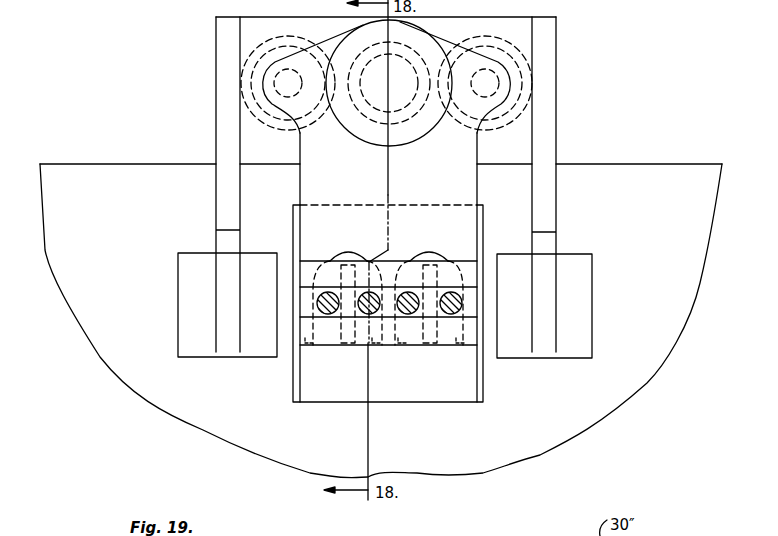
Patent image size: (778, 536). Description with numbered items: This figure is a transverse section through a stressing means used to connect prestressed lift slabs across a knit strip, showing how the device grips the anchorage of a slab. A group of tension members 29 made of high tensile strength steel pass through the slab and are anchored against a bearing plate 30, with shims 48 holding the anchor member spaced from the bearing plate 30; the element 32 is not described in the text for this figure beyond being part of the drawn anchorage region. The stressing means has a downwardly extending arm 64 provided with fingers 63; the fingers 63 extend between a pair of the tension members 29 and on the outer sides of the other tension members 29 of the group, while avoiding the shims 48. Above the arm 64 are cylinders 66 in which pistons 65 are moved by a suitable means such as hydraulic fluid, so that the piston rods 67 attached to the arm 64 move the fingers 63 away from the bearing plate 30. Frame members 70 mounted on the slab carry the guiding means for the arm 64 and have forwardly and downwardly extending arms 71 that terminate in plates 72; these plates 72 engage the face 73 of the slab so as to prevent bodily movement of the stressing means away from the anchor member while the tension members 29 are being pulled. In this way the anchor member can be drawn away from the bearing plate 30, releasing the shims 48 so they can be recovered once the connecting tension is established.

The tension members 29 is at (323, 297).
The bearing plate 30 is at (485, 240).
The base plate 32 is at (347, 390).
The shims 48 is at (338, 348).
The fingers 63 is at (302, 362).
The downwardly extending arm 64 is at (457, 186).
The pistons 65 is at (250, 72).
The cylinders 66 is at (260, 123).
The piston rods 67 is at (257, 50).
The frame members 70 is at (460, 25).
The forwardly and downwardly extending arms 71 is at (225, 147).
The plates 72 is at (192, 272).
The face of the slab 73 is at (668, 306).